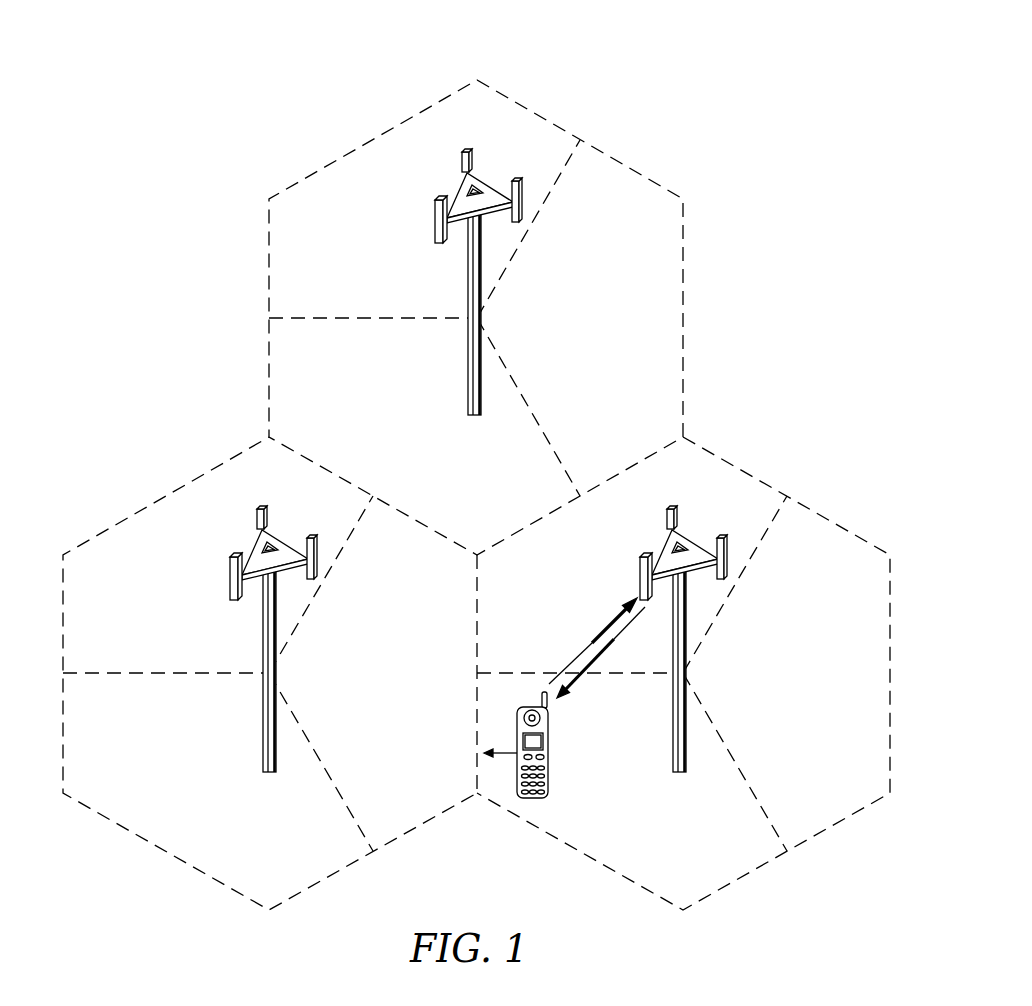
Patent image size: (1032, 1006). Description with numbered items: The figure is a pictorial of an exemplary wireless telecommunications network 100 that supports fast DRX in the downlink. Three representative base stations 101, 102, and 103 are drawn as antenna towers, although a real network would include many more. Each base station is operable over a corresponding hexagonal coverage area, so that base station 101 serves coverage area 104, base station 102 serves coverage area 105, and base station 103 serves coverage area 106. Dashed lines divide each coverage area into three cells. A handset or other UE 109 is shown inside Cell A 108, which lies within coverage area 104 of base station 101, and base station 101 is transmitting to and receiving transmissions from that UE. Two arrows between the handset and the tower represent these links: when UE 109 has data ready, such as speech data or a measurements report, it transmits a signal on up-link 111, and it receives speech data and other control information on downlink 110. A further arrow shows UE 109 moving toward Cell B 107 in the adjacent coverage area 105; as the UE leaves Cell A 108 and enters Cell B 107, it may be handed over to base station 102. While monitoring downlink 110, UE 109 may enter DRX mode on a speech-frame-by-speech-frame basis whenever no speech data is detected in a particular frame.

The wireless telecommunications network 100 is at (476, 455).
The base station 101 is at (687, 682).
The base station 102 is at (263, 640).
The base station 103 is at (468, 285).
The coverage area 104 is at (822, 833).
The coverage area 105 is at (167, 853).
The coverage area 106 is at (683, 318).
The Cell B 107 is at (427, 790).
The Cell A 108 is at (687, 862).
The UE 109 is at (549, 765).
The downlink 110 is at (600, 657).
The up-link 111 is at (604, 628).